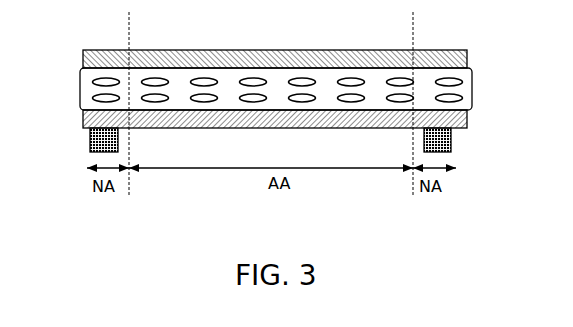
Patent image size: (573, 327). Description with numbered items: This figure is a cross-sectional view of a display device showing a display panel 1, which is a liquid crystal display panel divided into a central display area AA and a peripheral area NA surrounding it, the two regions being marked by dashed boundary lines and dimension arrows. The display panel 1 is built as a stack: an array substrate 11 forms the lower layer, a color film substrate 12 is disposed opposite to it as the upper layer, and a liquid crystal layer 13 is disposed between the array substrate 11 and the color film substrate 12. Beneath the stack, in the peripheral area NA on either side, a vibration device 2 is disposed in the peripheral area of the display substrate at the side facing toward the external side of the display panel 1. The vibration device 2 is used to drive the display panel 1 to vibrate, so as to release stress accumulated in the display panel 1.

The display panel 1 is at (269, 91).
The vibration device 2 is at (448, 138).
The array substrate 11 is at (90, 123).
The color film substrate 12 is at (97, 52).
The liquid crystal layer 13 is at (77, 67).